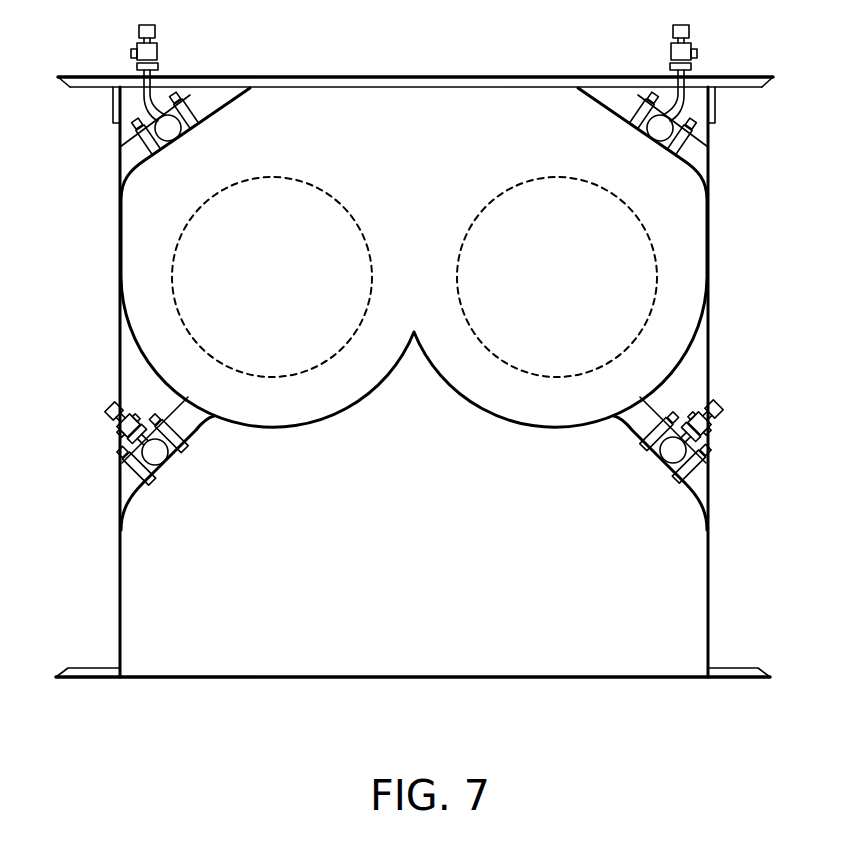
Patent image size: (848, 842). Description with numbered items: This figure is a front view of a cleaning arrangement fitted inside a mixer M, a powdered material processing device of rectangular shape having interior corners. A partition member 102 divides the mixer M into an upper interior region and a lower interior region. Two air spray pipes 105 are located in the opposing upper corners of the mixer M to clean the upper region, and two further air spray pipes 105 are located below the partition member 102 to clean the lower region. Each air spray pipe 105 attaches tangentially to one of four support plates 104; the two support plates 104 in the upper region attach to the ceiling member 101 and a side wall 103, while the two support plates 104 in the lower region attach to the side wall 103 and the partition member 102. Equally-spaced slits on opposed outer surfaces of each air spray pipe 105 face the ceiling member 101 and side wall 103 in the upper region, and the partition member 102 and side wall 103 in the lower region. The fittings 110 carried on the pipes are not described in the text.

The ceiling member 101 is at (410, 77).
The partition member 102 is at (141, 354).
The side wall 103 is at (122, 266).
The support plate 104 is at (200, 97).
The air spray pipe 105 is at (163, 128).
The pipe fitting / valve 110 is at (157, 49).
The mixer M is at (710, 272).